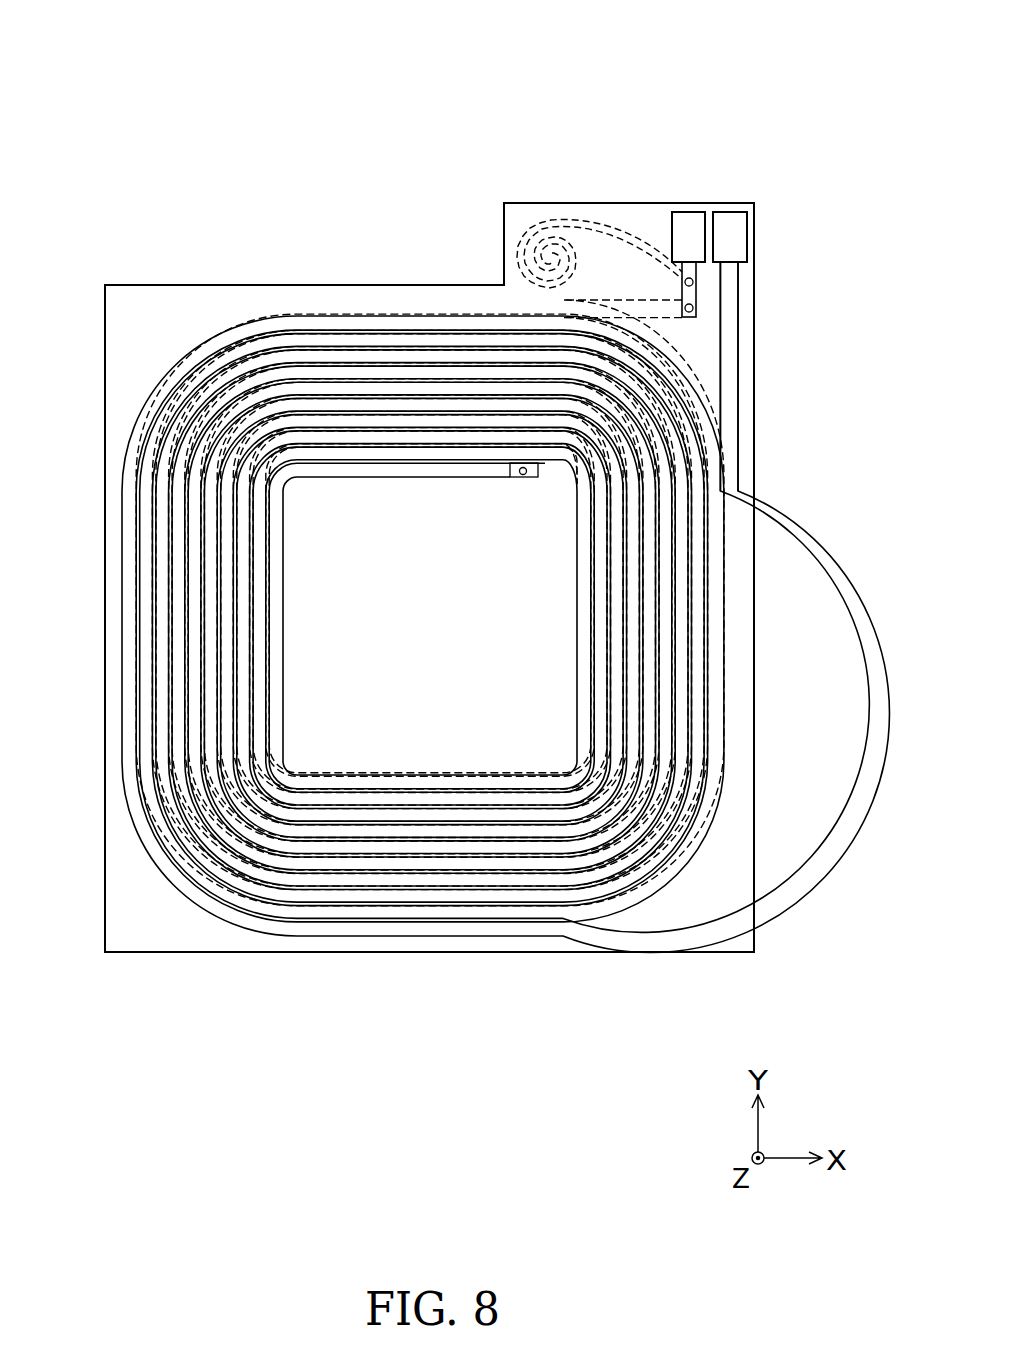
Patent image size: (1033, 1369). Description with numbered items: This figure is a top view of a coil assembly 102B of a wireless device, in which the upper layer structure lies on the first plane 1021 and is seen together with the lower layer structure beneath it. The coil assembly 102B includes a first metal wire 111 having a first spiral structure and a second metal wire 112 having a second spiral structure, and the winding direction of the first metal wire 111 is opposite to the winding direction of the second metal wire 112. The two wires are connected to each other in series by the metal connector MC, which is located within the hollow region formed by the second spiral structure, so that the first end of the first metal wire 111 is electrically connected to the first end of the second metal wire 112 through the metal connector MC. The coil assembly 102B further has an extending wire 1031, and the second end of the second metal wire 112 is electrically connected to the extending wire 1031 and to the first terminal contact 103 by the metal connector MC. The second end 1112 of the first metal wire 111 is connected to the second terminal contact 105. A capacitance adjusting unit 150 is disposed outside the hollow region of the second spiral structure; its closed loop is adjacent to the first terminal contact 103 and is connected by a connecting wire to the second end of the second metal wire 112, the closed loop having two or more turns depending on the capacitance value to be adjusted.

The coil assembly 102B is at (111, 34).
The capacitance adjusting unit 150 is at (539, 220).
The extending wire 1031 is at (683, 268).
The first terminal contact 103 is at (690, 220).
The second terminal contact 105 is at (731, 220).
The second end of the first metal wire 1112 is at (732, 293).
The metal connector MC is at (522, 481).
The first metal wire 111 is at (363, 479).
The second metal wire 112 is at (563, 483).
The first plane 1021 is at (740, 848).